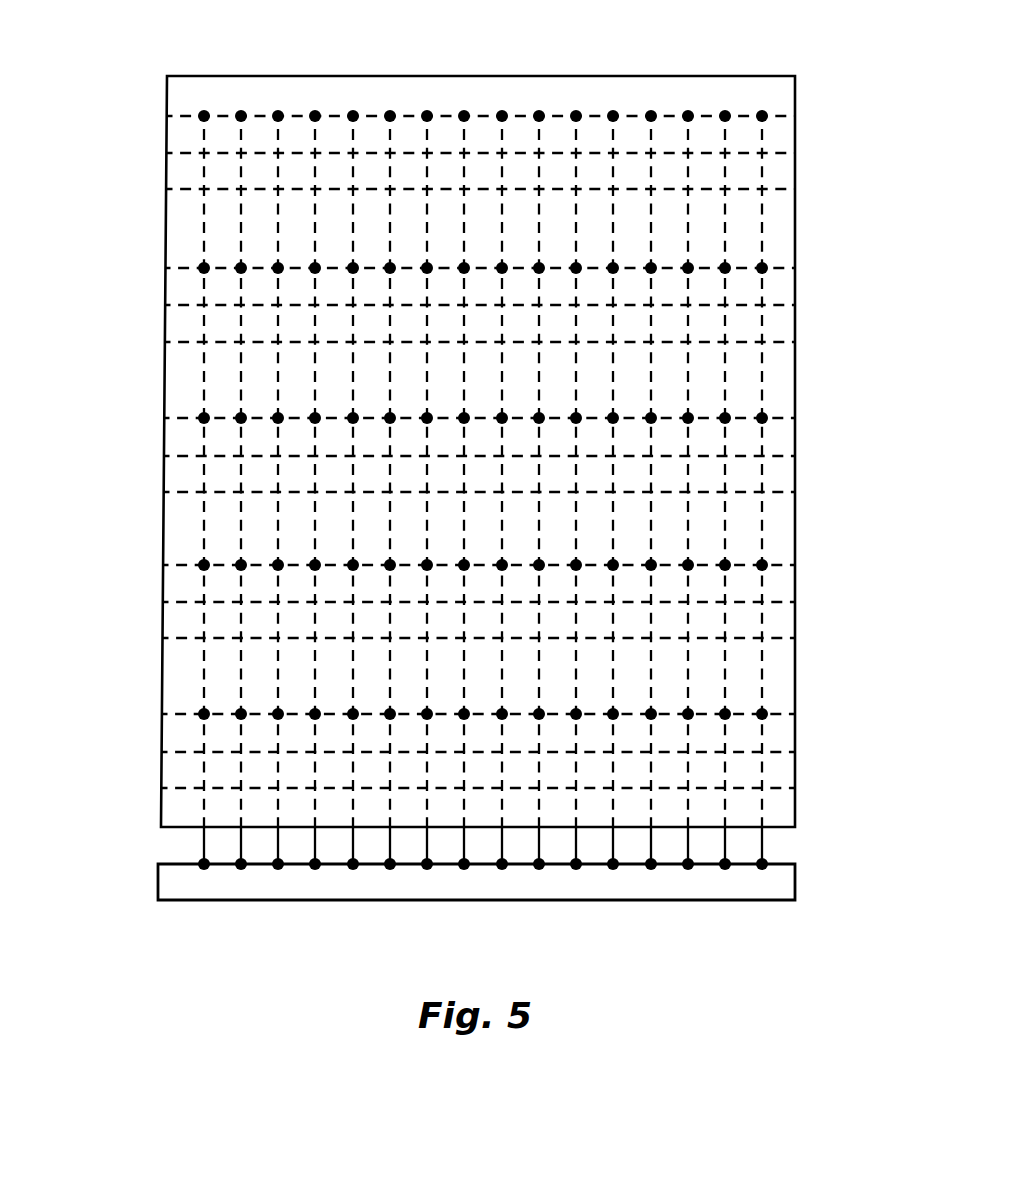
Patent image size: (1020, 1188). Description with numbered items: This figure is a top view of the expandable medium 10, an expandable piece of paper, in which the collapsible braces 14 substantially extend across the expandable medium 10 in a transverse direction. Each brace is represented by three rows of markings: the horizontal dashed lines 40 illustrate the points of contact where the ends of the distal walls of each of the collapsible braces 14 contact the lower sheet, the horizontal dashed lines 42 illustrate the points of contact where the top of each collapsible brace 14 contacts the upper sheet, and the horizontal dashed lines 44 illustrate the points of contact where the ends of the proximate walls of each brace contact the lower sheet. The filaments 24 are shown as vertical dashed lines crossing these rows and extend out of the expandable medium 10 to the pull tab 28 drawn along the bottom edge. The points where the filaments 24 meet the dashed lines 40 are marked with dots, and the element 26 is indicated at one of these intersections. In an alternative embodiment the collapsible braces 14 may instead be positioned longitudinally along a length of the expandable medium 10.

The expandable medium 10 is at (113, 73).
The collapsible braces 14 is at (161, 113).
The filaments 24 is at (197, 804).
The contact nodes 26 is at (200, 714).
The pull tab 28 is at (777, 878).
The horizontal dashed lines 40 is at (777, 117).
The horizontal dashed lines 42 is at (777, 154).
The horizontal dashed lines 44 is at (777, 190).